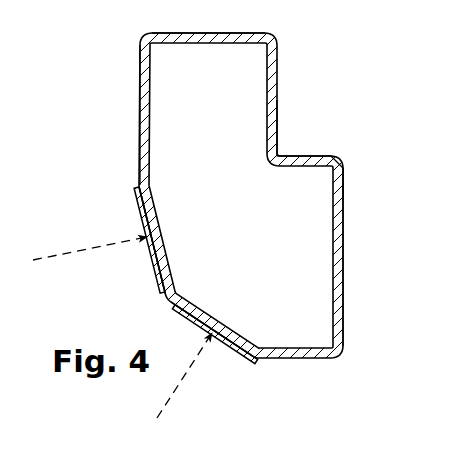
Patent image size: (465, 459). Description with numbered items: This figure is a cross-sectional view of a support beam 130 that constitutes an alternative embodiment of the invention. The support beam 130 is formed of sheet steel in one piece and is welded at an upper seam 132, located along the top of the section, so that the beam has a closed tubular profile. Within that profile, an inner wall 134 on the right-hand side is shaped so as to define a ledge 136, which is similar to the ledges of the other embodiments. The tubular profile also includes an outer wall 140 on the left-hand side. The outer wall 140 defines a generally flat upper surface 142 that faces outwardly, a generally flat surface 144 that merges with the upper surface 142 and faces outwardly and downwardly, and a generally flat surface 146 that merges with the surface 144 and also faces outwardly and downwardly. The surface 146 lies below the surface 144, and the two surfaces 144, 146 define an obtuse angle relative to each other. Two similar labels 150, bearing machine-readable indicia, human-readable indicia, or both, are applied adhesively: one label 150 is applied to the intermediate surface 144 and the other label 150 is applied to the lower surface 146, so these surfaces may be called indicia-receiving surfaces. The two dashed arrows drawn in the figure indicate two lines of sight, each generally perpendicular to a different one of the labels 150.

The support beam 130 is at (126, 108).
The upper seam 132 is at (208, 40).
The inner wall 134 is at (345, 205).
The ledge 136 is at (290, 141).
The outer wall 140 is at (140, 88).
The upper surface 142 is at (138, 141).
The intermediate surface 144 is at (153, 252).
The lower surface 146 is at (240, 345).
The label 150 is at (178, 311).